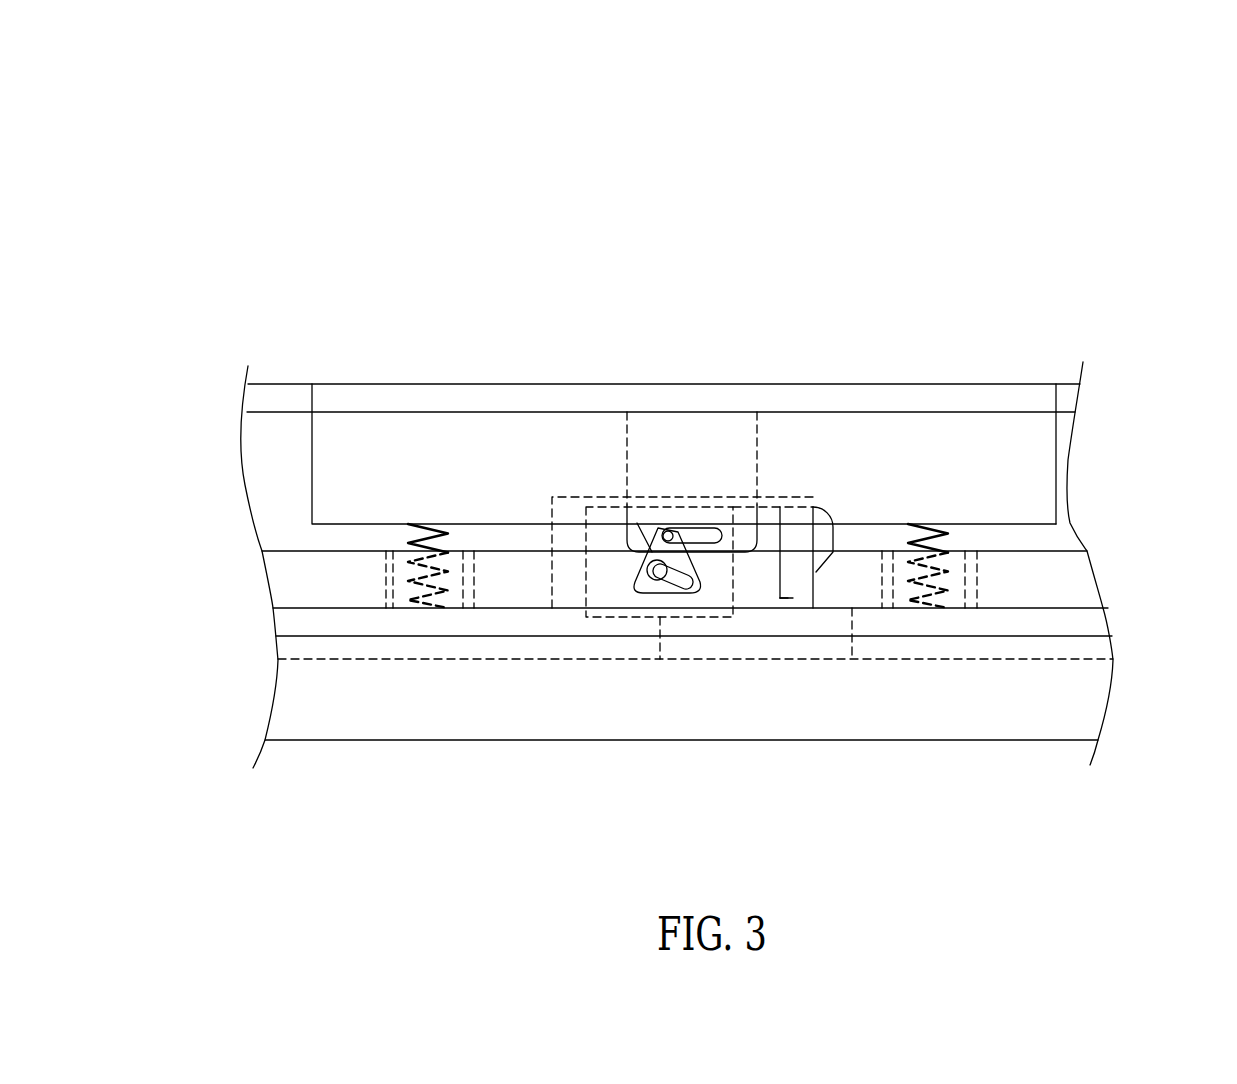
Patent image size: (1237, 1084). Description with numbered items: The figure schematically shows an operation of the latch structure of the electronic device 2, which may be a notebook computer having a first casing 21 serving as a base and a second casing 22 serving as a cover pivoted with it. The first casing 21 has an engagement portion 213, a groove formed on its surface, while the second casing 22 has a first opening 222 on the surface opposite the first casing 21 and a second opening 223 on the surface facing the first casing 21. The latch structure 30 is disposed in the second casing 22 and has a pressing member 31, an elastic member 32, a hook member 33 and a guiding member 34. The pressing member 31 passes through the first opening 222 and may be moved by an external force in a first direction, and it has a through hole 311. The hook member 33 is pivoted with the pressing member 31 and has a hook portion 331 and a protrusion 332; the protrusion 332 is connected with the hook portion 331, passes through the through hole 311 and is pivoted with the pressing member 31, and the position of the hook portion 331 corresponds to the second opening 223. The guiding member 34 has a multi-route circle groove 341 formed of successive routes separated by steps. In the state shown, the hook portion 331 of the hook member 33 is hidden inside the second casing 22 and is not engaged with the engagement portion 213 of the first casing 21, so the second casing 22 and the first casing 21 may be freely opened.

The electronic device 2 is at (198, 87).
The first casing 21 is at (1017, 725).
The engagement portion 213 is at (680, 648).
The second casing 22 is at (1065, 460).
The first opening 222 is at (1056, 384).
The second opening 223 is at (747, 628).
The latch structure 30 is at (308, 190).
The pressing member 31 is at (897, 369).
The through hole 311 is at (705, 530).
The elastic member 32 is at (430, 610).
The hook member 33 is at (818, 567).
The hook portion 331 is at (793, 598).
The protrusion 332 is at (668, 534).
The guiding member 34 is at (605, 614).
The multi-route circle groove 341 is at (637, 523).